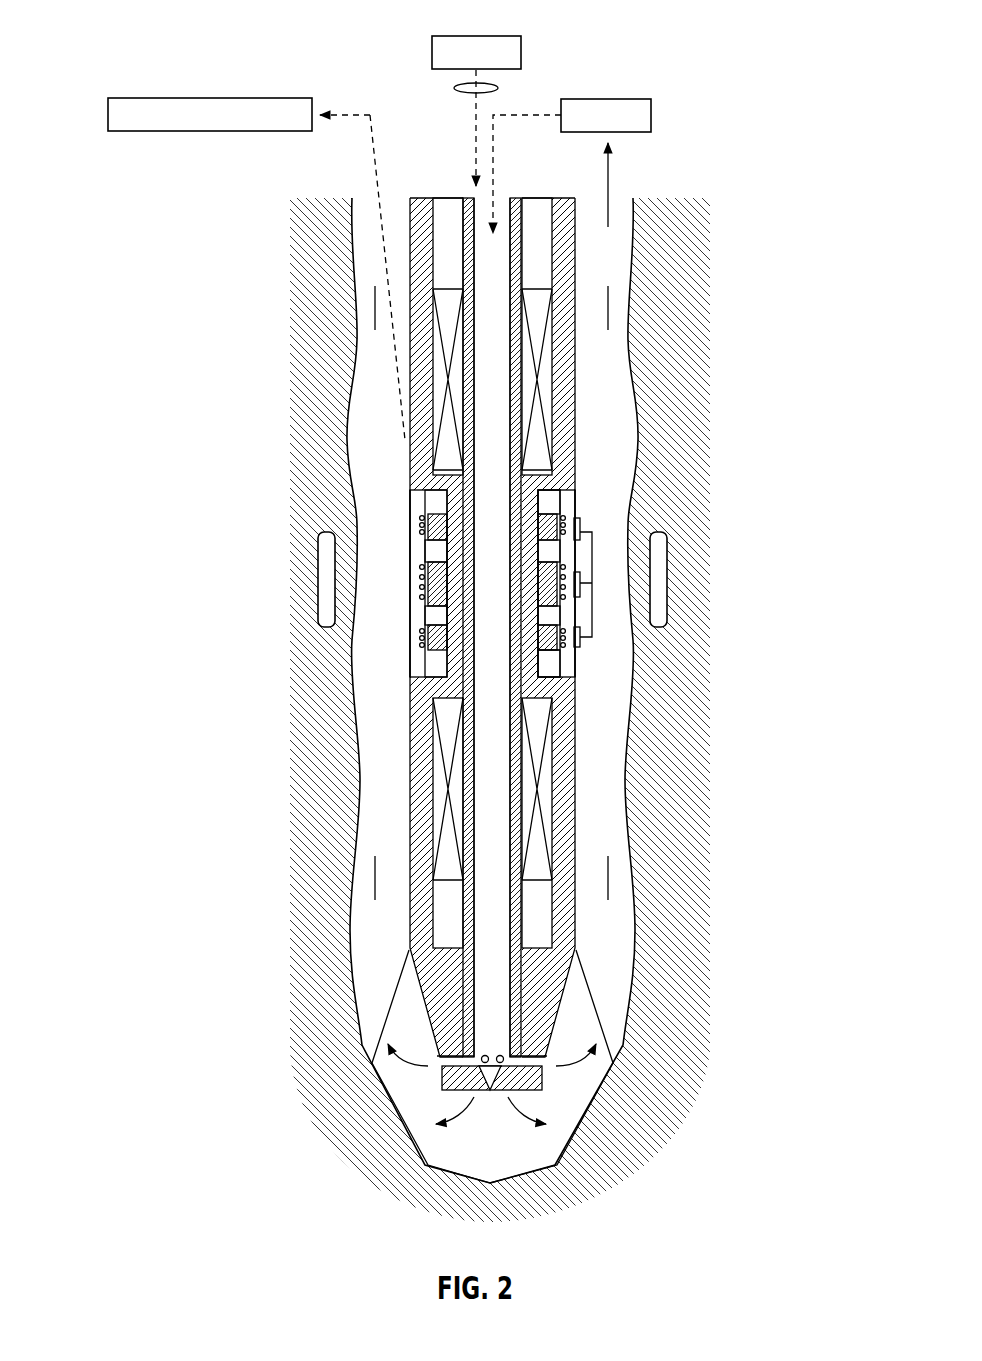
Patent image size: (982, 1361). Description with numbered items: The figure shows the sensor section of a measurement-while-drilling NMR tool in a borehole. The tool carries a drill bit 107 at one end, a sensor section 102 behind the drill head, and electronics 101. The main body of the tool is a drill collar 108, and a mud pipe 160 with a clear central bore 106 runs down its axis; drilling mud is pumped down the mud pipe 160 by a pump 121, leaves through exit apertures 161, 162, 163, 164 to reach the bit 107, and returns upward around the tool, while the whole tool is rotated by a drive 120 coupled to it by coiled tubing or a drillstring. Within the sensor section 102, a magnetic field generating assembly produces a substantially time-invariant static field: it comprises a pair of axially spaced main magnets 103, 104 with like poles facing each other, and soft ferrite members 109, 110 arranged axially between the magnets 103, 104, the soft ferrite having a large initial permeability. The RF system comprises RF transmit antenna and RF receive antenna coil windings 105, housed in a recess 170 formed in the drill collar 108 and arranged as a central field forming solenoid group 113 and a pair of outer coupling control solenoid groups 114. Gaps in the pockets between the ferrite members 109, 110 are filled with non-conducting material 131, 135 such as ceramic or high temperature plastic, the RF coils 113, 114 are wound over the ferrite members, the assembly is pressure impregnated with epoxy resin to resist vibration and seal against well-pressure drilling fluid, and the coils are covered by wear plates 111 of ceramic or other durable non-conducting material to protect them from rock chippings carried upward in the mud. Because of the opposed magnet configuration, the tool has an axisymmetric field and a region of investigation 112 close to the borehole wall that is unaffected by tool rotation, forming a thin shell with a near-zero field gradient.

The electronics 101 is at (180, 98).
The sensor section 102 is at (376, 392).
The main magnet 103 is at (535, 314).
The main magnet 104 is at (537, 853).
The RF transmit antenna and RF receive antenna coil windings 105 is at (552, 555).
The central bore 106 is at (494, 808).
The drill bit 107 is at (495, 1142).
The drill collar 108 is at (568, 400).
The ferrite member 109 is at (431, 598).
The ferrite member 110 is at (431, 530).
The wear plates 111 is at (568, 502).
The region of investigation 112 is at (659, 600).
The field forming solenoid group 113 is at (404, 577).
The coupling control solenoid groups 114 is at (404, 508).
The drive 120 is at (453, 36).
The pump 121 is at (628, 99).
The non-conducting material 131 is at (433, 495).
The non-conducting material 135 is at (592, 542).
The mud pipe 160 is at (515, 965).
The exit aperture 161 is at (448, 1056).
The exit aperture 162 is at (486, 1075).
The exit aperture 163 is at (496, 1075).
The exit aperture 164 is at (535, 1056).
The recess 170 is at (562, 662).